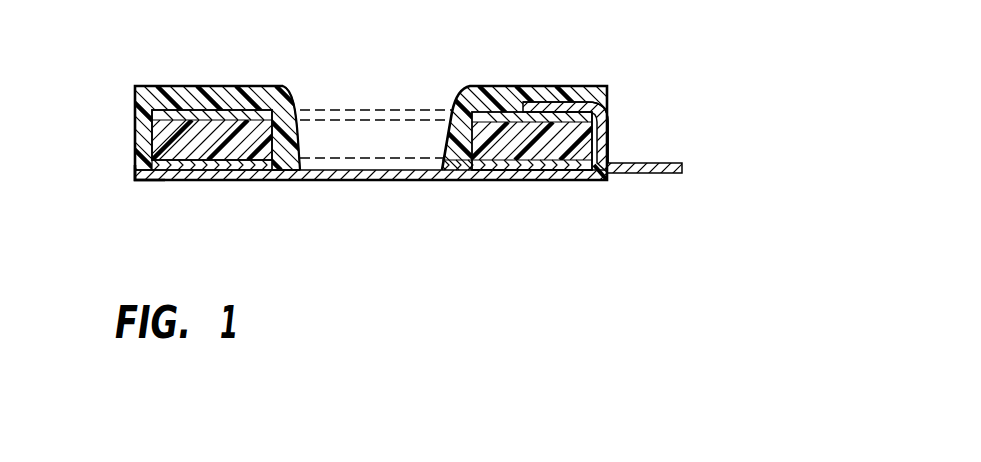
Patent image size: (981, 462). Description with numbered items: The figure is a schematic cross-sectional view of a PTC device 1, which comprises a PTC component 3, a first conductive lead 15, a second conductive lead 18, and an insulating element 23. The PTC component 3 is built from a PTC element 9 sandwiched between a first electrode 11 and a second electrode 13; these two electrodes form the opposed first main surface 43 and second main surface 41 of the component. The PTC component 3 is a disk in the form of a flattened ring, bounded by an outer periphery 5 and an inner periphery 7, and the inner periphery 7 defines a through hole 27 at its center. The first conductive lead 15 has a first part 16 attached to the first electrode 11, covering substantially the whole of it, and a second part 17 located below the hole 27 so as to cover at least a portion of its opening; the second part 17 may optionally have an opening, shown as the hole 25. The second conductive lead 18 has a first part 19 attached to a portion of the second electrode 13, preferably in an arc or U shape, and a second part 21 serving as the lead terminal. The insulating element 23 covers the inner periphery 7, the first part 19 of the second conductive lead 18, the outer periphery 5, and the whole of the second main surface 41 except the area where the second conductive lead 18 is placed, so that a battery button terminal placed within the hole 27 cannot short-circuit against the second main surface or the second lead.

The PTC device 1 is at (487, 60).
The PTC component 3 is at (595, 215).
The outer periphery 5 is at (152, 151).
The inner periphery 7 is at (452, 120).
The PTC element 9 is at (560, 157).
The first electrode 11 is at (503, 168).
The second electrode 13 is at (482, 168).
The first conductive lead 15 is at (205, 176).
The first part of first conductive lead 16 is at (228, 173).
The second part of first conductive lead 17 is at (290, 173).
The second conductive lead 18 is at (623, 15).
The first part of second conductive lead 19 is at (551, 88).
The second part of second conductive lead 21 is at (633, 163).
The insulating element 23 is at (235, 97).
The hole in first conductive lead 25 is at (367, 176).
The hole in PTC component 27 is at (348, 104).
The second main surface 41 is at (190, 97).
The first main surface 43 is at (160, 184).